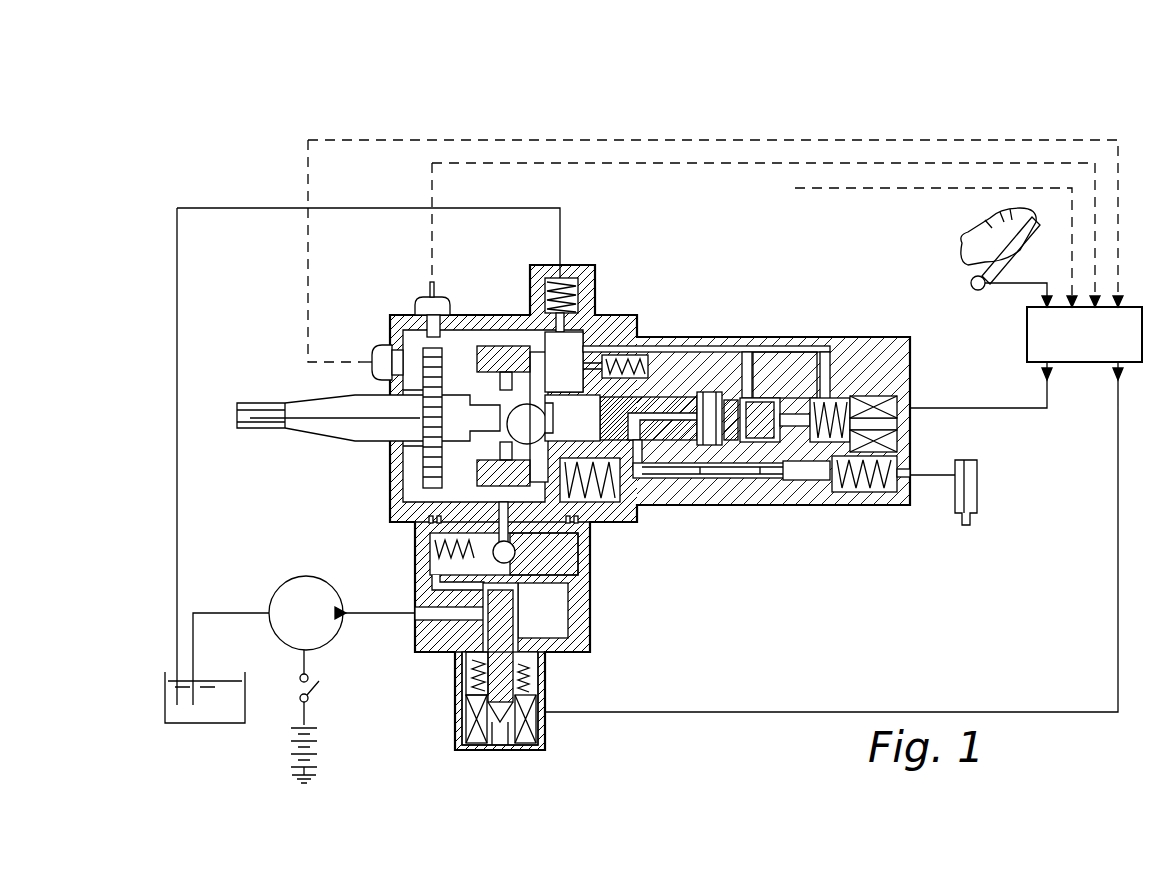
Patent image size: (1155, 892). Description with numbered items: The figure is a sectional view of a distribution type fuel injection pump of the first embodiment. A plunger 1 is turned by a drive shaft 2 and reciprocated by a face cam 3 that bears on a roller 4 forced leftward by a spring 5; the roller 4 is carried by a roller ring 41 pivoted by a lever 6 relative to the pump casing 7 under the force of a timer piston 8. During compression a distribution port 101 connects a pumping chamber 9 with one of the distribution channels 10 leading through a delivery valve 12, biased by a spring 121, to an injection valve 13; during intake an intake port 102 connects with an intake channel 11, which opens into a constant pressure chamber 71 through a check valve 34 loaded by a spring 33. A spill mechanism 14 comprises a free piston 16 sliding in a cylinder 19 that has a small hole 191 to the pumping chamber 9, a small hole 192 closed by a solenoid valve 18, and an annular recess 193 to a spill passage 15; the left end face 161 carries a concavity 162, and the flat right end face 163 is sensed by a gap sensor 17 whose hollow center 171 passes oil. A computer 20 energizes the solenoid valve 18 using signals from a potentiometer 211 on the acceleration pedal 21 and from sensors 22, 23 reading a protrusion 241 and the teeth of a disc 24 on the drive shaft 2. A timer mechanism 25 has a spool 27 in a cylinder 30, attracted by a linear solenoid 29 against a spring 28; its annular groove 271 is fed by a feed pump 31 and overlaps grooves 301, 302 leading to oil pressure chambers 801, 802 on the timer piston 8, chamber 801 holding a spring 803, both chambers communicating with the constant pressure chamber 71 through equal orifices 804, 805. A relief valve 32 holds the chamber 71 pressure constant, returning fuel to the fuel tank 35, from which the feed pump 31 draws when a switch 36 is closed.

The plunger 1 is at (678, 478).
The drive shaft 2 is at (313, 428).
The face cam 3 is at (506, 444).
The roller 4 is at (520, 345).
The spring 5 is at (597, 508).
The lever 6 is at (540, 647).
The pump casing 7 is at (735, 488).
The timer piston 8 is at (550, 607).
The pumping chamber 9 is at (700, 446).
The distribution channel 10 is at (762, 478).
The intake channel 11 is at (672, 355).
The delivery valve 12 is at (860, 492).
The injection valve 13 is at (977, 490).
The spill mechanism 14 is at (882, 335).
The spill passage 15 is at (795, 188).
The free piston 16 is at (770, 400).
The gap sensor 17 is at (825, 400).
The solenoid valve 18 is at (895, 400).
The cylinder 19 is at (800, 482).
The computer 20 is at (1026, 355).
The acceleration pedal 21 is at (1032, 248).
The sensor 22 is at (385, 345).
The sensor 23 is at (420, 298).
The disc 24 is at (405, 473).
The timer mechanism 25 is at (543, 700).
The spool 27 is at (498, 740).
The spring 28 is at (466, 708).
The linear solenoid 29 is at (535, 752).
The cylinder 30 is at (470, 685).
The feed pump 31 is at (304, 640).
The relief valve 32 is at (568, 292).
The spring 33 is at (630, 362).
The check valve 34 is at (575, 350).
The fuel tank 35 is at (240, 668).
The switch 36 is at (316, 693).
The roller ring 41 is at (483, 345).
The constant pressure chamber 71 is at (575, 345).
The distribution port 101 is at (640, 480).
The intake port 102 is at (695, 405).
The spring 121 is at (882, 506).
The left end face 161 is at (735, 478).
The concavity 162 is at (748, 370).
The right end face 163 is at (790, 412).
The hollow center 171 is at (790, 480).
The small hole 191 is at (738, 345).
The small hole 192 is at (835, 400).
The annular recess 193 is at (768, 478).
The potentiometer 211 is at (978, 290).
The protrusion 241 is at (395, 390).
The annular groove 271 is at (468, 660).
The annular groove 301 is at (416, 648).
The annular groove 302 is at (543, 682).
The oil pressure chamber 801 is at (434, 552).
The oil pressure chamber 802 is at (572, 565).
The spring 803 is at (436, 585).
The orifice 804 is at (422, 521).
The orifice 805 is at (565, 519).